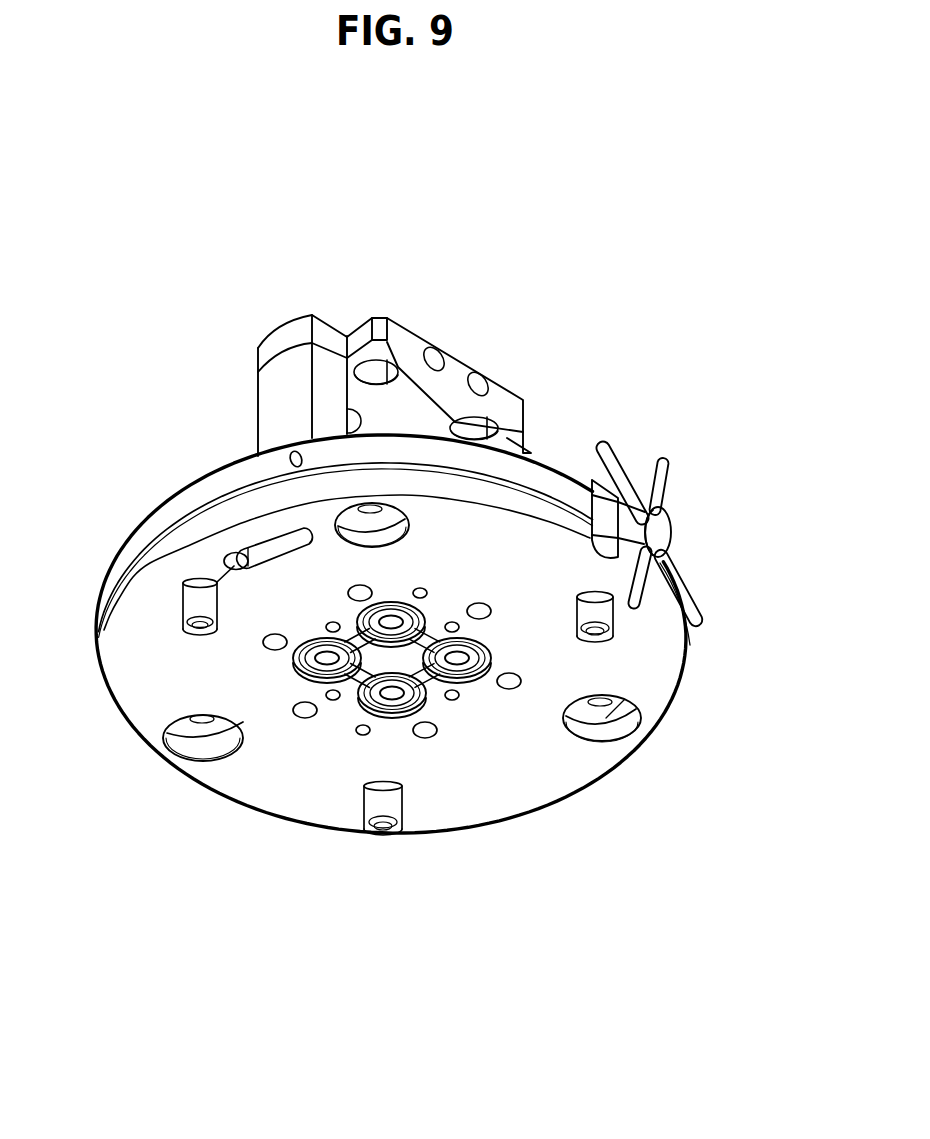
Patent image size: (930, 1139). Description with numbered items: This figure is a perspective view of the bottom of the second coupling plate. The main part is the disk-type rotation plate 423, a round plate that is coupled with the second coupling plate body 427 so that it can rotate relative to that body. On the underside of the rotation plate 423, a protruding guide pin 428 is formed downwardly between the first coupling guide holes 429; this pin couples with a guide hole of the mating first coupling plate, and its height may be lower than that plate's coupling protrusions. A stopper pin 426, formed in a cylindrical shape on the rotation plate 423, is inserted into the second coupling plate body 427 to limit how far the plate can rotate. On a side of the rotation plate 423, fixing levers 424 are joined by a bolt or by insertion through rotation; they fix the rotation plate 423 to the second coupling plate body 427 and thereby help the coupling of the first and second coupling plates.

The disk-type rotation plate 423 is at (552, 474).
The fixing lever 424 is at (664, 474).
The stopper pin 426 is at (190, 582).
The second coupling plate body 427 is at (260, 500).
The protruding guide pin 428 is at (380, 830).
The first coupling guide hole 429 is at (203, 743).